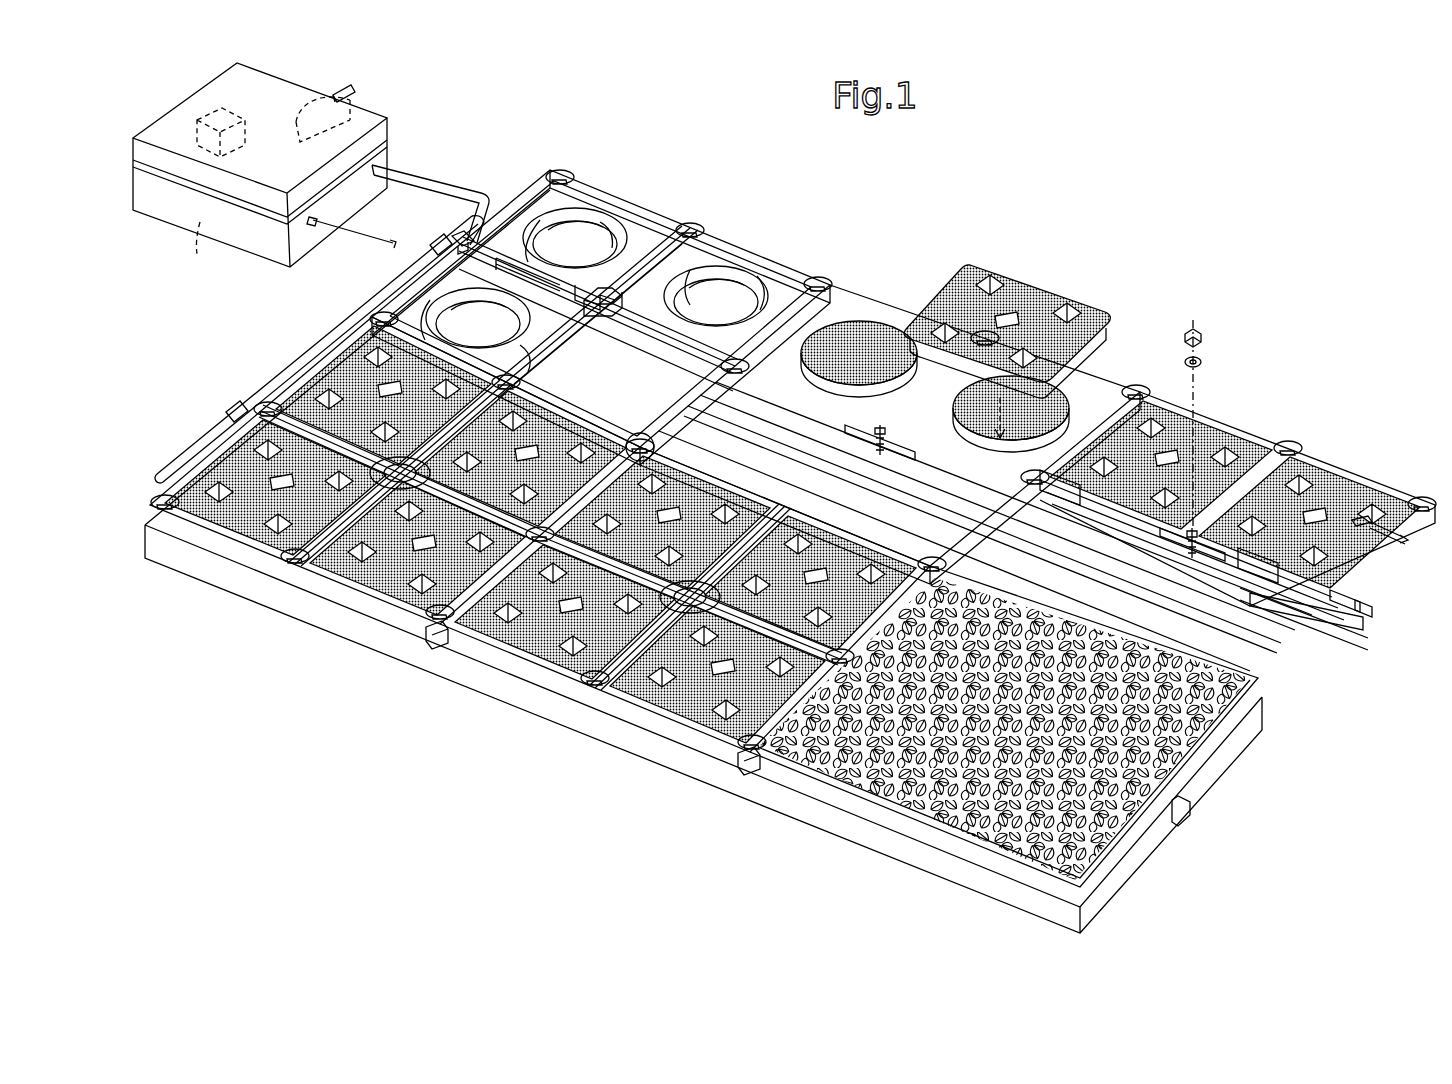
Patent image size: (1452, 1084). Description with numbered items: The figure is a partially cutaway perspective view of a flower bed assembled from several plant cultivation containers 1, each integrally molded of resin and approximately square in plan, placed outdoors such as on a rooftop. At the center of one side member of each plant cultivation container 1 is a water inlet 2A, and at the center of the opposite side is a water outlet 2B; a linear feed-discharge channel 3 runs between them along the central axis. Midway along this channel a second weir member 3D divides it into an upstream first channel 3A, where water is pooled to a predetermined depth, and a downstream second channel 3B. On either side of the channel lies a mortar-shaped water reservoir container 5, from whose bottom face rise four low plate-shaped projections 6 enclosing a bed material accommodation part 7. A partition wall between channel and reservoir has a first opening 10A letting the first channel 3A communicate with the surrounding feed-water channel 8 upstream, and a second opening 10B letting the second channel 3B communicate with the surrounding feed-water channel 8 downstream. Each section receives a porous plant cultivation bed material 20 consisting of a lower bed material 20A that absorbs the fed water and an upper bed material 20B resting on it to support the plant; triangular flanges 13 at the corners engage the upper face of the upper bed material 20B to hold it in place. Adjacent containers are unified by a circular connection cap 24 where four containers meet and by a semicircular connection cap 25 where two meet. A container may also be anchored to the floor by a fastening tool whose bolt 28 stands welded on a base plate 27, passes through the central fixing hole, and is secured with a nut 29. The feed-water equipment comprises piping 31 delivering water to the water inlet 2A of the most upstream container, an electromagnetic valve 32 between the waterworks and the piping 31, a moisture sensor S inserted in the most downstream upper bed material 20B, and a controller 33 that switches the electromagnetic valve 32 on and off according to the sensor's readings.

The plant cultivation container 1 is at (684, 210).
The water inlet 2A is at (463, 240).
The water outlet 2B is at (1375, 608).
The feed-discharge channel 3 is at (516, 290).
The first channel 3A is at (1062, 498).
The second channel 3B is at (1347, 604).
The second weir member 3D is at (1258, 566).
The water reservoir container 5 is at (435, 357).
The plate-shaped projection 6 is at (631, 250).
The bed material accommodation part 7 is at (768, 305).
The surrounding feed-water channel 8 is at (560, 232).
The first opening 10A is at (1160, 492).
The second opening 10B is at (1252, 600).
The flange 13 is at (1275, 440).
The plant cultivation bed material 20 is at (917, 205).
The lower bed material 20A is at (880, 345).
The upper bed material 20B is at (207, 477).
The connection cap 24 is at (656, 447).
The connection cap 25 is at (436, 640).
The base plate 27 is at (847, 430).
The bolt 28 is at (1192, 527).
The nut 29 is at (1190, 330).
The piping 31 is at (308, 362).
The electromagnetic valve 32 is at (375, 112).
The controller 33 is at (260, 172).
The moisture sensor S is at (1367, 515).